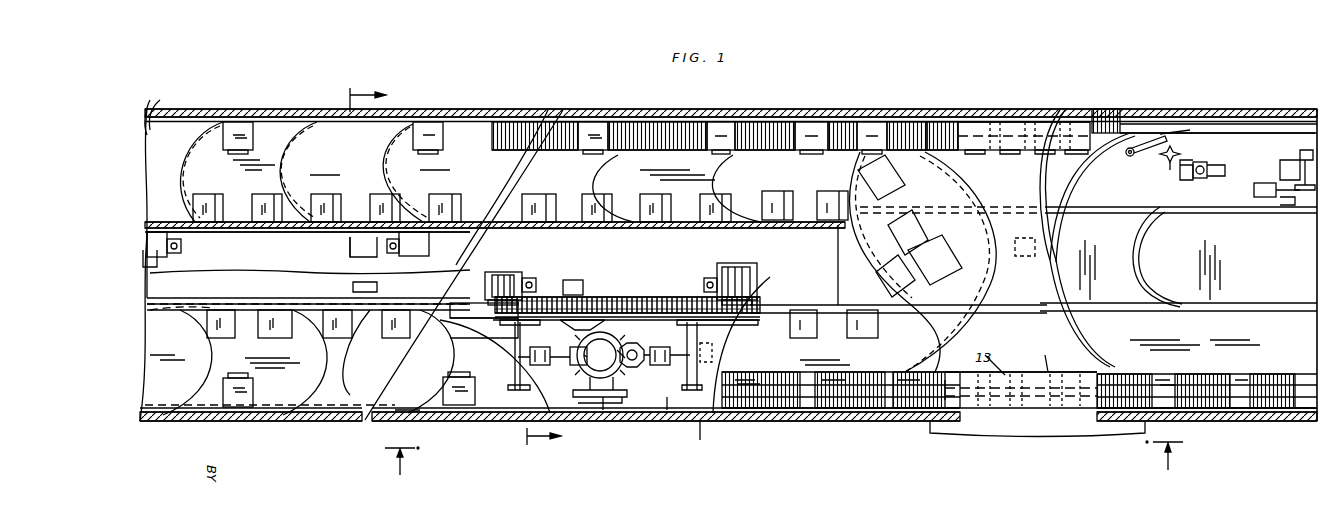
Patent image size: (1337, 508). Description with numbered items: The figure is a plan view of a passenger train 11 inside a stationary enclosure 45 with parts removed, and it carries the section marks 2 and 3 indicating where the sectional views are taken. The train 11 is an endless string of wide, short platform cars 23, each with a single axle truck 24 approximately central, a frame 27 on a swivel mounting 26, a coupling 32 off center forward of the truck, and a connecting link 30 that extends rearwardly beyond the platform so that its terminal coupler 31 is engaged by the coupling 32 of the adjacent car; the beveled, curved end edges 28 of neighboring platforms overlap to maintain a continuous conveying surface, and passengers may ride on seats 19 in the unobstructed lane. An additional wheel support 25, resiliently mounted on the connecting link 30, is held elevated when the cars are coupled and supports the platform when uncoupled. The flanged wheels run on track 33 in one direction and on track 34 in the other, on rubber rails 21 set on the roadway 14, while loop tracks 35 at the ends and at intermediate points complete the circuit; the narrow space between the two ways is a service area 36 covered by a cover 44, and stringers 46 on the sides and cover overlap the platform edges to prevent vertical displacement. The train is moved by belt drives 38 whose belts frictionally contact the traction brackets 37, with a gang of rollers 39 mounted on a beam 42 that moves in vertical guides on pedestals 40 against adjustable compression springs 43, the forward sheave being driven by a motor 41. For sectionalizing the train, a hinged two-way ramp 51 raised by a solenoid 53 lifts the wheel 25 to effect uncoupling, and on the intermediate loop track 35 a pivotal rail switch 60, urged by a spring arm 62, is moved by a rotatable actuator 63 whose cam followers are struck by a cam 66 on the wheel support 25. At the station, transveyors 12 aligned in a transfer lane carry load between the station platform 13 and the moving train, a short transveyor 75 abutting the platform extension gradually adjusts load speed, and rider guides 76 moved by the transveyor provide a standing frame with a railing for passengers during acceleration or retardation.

The train 11 is at (156, 110).
The transveyor 12 is at (553, 152).
The station platform 13 is at (1028, 112).
The roadway 14 is at (1032, 354).
The seats 19 is at (335, 193).
The rubber rails 21 is at (668, 421).
The platform car 23 is at (272, 171).
The axle truck 24 is at (612, 413).
The wheel support 25 is at (1208, 172).
The swivel mounting 26 is at (578, 372).
The frame 27 is at (700, 336).
The end edges 28 is at (182, 158).
The connecting link 30 is at (665, 365).
The terminal coupler 31 is at (622, 368).
The coupling 32 is at (640, 340).
The track 33 is at (1250, 213).
The track 34 is at (1265, 306).
The loop track 35 is at (978, 289).
The service area 36 is at (274, 251).
The traction bracket 37 is at (465, 302).
The belt drive 38 is at (525, 322).
The rollers 39 is at (625, 295).
The pedestal 40 is at (509, 272).
The motor 41 is at (170, 250).
The beam 42 is at (705, 275).
The compression springs 43 is at (535, 280).
The cover 44 is at (323, 275).
The enclosure 45 is at (705, 421).
The stringers 46 is at (508, 232).
The ramp 51 is at (1290, 158).
The solenoid 53 is at (1256, 188).
The rail switch 60 is at (1167, 138).
The arm 62 is at (1148, 160).
The rotatable actuator 63 is at (1168, 160).
The cam 66 is at (1180, 168).
The transveyor 75 is at (935, 153).
The rider guide 76 is at (418, 135).
The section line 2- 2 is at (784, 468).
The section line 3- 3 is at (460, 266).